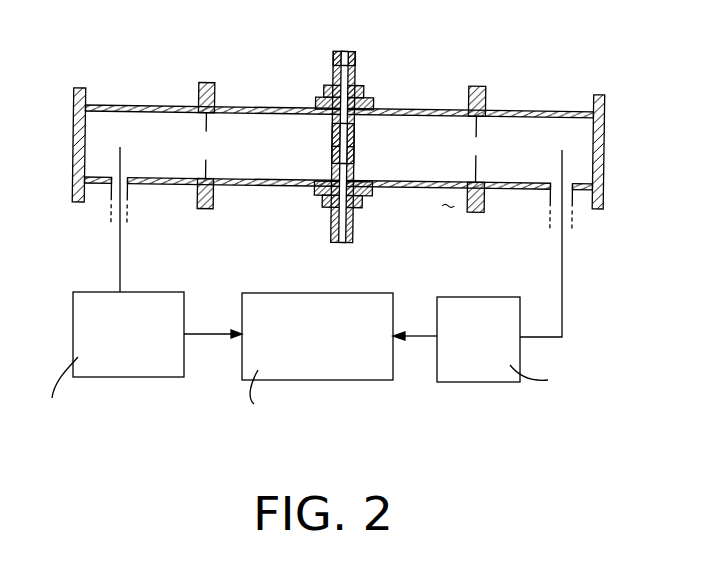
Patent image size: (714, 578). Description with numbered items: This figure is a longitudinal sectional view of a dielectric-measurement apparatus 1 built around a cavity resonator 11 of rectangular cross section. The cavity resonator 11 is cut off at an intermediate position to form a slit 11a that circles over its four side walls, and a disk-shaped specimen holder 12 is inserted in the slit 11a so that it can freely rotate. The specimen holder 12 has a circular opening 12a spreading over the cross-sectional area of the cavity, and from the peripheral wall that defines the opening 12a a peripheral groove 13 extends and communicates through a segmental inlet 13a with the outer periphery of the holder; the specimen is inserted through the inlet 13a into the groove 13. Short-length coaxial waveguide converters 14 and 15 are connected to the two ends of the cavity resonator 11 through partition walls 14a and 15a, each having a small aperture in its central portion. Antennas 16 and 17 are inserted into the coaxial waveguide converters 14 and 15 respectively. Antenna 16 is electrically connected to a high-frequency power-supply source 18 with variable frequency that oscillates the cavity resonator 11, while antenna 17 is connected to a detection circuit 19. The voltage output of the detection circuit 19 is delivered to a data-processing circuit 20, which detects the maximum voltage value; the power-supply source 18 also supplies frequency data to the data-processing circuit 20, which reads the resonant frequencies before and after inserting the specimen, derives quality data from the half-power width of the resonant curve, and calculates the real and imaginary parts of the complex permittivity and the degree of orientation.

The measuring apparatus 1 is at (433, 111).
The cavity resonator 11 is at (260, 86).
The slit 11a is at (355, 156).
The specimen holder 12 is at (332, 229).
The circular opening 12a is at (341, 137).
The peripheral groove 13 is at (343, 78).
The segmental inlet 13a is at (342, 49).
The coaxial waveguide converter 14 is at (190, 185).
The partition wall 14a is at (205, 131).
The coaxial waveguide converter 15 is at (520, 93).
The partition wall 15a is at (478, 164).
The antenna 16 is at (120, 148).
The antenna 17 is at (562, 152).
The high-frequency power-supply source 18 is at (90, 291).
The detection circuit 19 is at (465, 297).
The data-processing circuit 20 is at (264, 293).